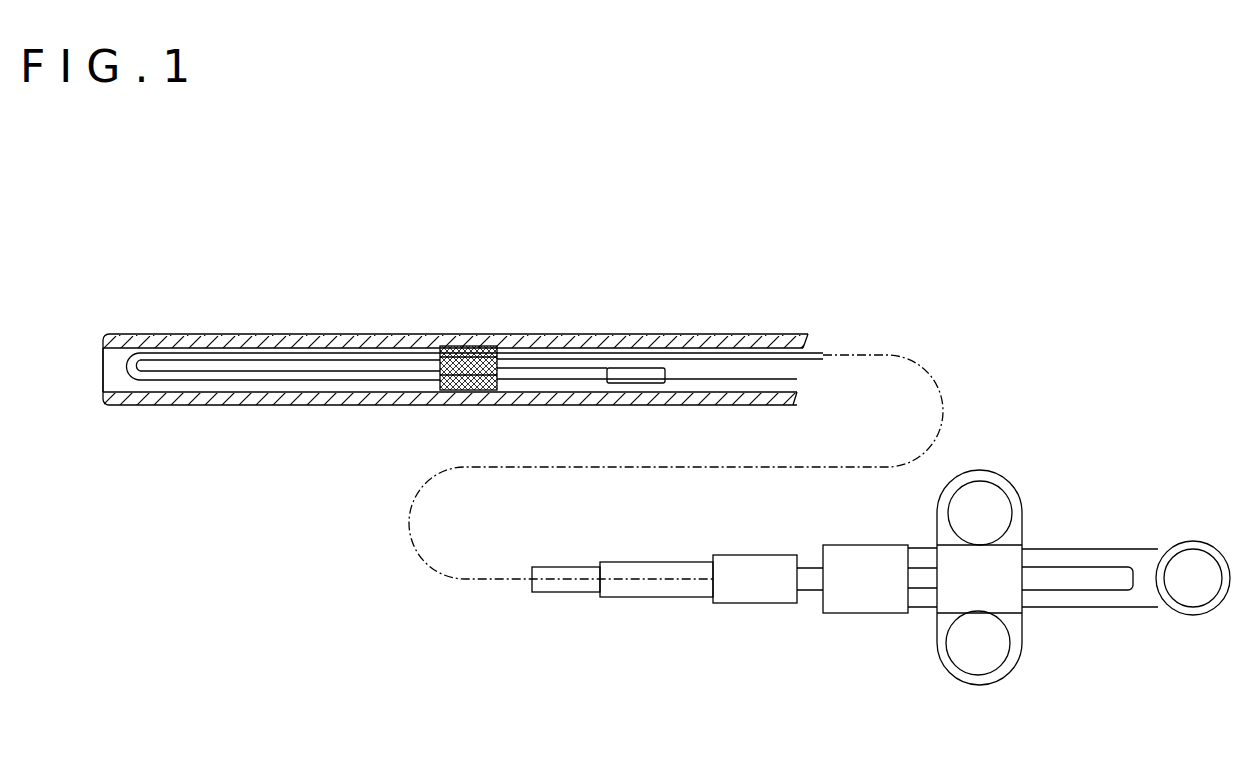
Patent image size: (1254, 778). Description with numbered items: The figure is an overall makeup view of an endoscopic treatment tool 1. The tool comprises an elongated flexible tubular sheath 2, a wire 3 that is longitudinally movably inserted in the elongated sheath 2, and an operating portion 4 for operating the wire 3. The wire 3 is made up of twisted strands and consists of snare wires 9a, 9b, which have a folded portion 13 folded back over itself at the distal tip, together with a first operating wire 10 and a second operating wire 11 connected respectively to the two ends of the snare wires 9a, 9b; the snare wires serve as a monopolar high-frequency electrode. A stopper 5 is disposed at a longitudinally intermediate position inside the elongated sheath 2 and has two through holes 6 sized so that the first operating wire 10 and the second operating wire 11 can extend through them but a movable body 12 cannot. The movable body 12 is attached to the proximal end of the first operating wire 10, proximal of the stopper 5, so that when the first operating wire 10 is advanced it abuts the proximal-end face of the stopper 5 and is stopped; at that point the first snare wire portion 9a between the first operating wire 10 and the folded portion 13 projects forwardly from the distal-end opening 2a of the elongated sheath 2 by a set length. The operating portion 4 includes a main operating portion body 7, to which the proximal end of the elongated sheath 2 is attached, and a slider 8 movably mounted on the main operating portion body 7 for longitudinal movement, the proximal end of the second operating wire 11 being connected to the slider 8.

The endoscopic treatment tool 1 is at (138, 232).
The elongated sheath 2 is at (315, 336).
The distal-end opening 2a is at (103, 380).
The wire 3 is at (356, 405).
The operating portion 4 is at (1100, 487).
The stopper 5 is at (512, 382).
The through holes 6 is at (430, 346).
The main operating portion body 7 is at (745, 604).
The slider 8 is at (1012, 670).
The first snare wire portion 9a is at (293, 381).
The snare wire 9b is at (242, 352).
The first operating wire 10 is at (556, 381).
The second operating wire 11 is at (688, 352).
The movable body 12 is at (636, 384).
The folded portion 13 is at (124, 366).